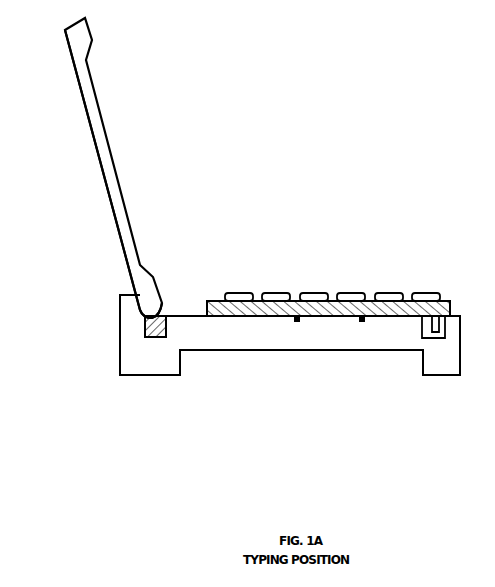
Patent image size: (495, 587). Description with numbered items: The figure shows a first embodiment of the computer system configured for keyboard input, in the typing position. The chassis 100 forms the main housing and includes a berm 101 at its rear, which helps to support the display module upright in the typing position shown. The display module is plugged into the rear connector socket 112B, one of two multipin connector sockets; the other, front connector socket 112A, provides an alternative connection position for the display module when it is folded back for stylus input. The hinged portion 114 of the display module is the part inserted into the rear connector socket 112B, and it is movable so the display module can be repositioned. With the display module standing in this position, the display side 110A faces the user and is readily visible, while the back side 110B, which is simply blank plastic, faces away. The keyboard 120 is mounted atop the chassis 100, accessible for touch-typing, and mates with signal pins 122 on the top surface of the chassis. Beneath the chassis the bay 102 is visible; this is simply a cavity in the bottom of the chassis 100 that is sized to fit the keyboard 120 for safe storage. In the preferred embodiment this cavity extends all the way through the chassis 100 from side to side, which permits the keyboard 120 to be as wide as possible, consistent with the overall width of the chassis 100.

The chassis 100 is at (301, 345).
The berm 101 is at (128, 306).
The bay 102 is at (414, 372).
The display side 110A is at (140, 198).
The back side 110B is at (104, 216).
The front connector socket 112A is at (438, 345).
The rear connector socket 112B is at (154, 350).
The hinged portion 114 is at (170, 308).
The keyboard 120 is at (388, 275).
The signal pins 122 is at (355, 334).